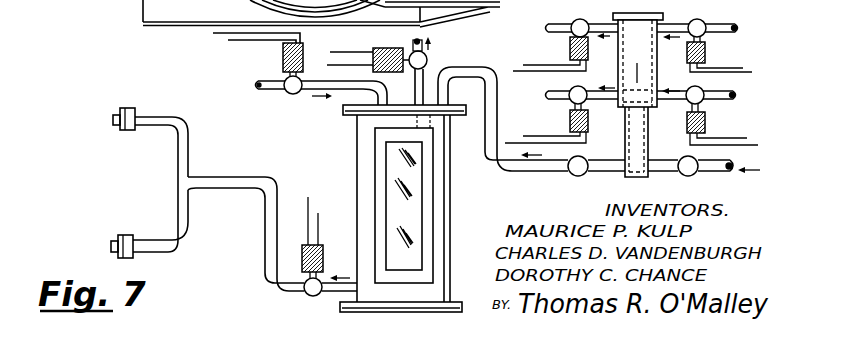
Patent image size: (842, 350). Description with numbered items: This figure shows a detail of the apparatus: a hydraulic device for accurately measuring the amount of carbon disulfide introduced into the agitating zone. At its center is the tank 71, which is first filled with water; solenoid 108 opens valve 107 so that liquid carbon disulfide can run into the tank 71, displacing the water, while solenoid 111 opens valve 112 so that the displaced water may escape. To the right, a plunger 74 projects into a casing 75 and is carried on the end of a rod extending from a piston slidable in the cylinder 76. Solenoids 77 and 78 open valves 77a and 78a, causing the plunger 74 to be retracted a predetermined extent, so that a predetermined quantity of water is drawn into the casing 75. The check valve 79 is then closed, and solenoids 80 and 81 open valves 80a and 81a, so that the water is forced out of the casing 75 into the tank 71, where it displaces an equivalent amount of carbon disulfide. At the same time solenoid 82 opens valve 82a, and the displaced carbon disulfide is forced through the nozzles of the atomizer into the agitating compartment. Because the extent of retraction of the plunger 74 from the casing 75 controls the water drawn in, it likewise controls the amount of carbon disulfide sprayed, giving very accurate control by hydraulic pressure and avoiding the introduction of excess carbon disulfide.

The tank 71 is at (357, 161).
The valve 107 is at (282, 58).
The valve 108 is at (285, 92).
The solenoid 111 is at (396, 74).
The valve 112 is at (430, 56).
The solenoid 82 is at (323, 258).
The valve 82a is at (305, 297).
The plunger 74 is at (634, 160).
The casing 75 is at (641, 130).
The cylinder 76 is at (624, 42).
The check valve 79 is at (692, 160).
The valve 80a is at (547, 26).
The solenoid 80 is at (570, 46).
The valve 77a is at (548, 94).
The solenoid 77 is at (570, 121).
The valve 78a is at (703, 22).
The solenoid 78 is at (706, 52).
The valve 81a is at (704, 95).
The solenoid 81 is at (706, 126).